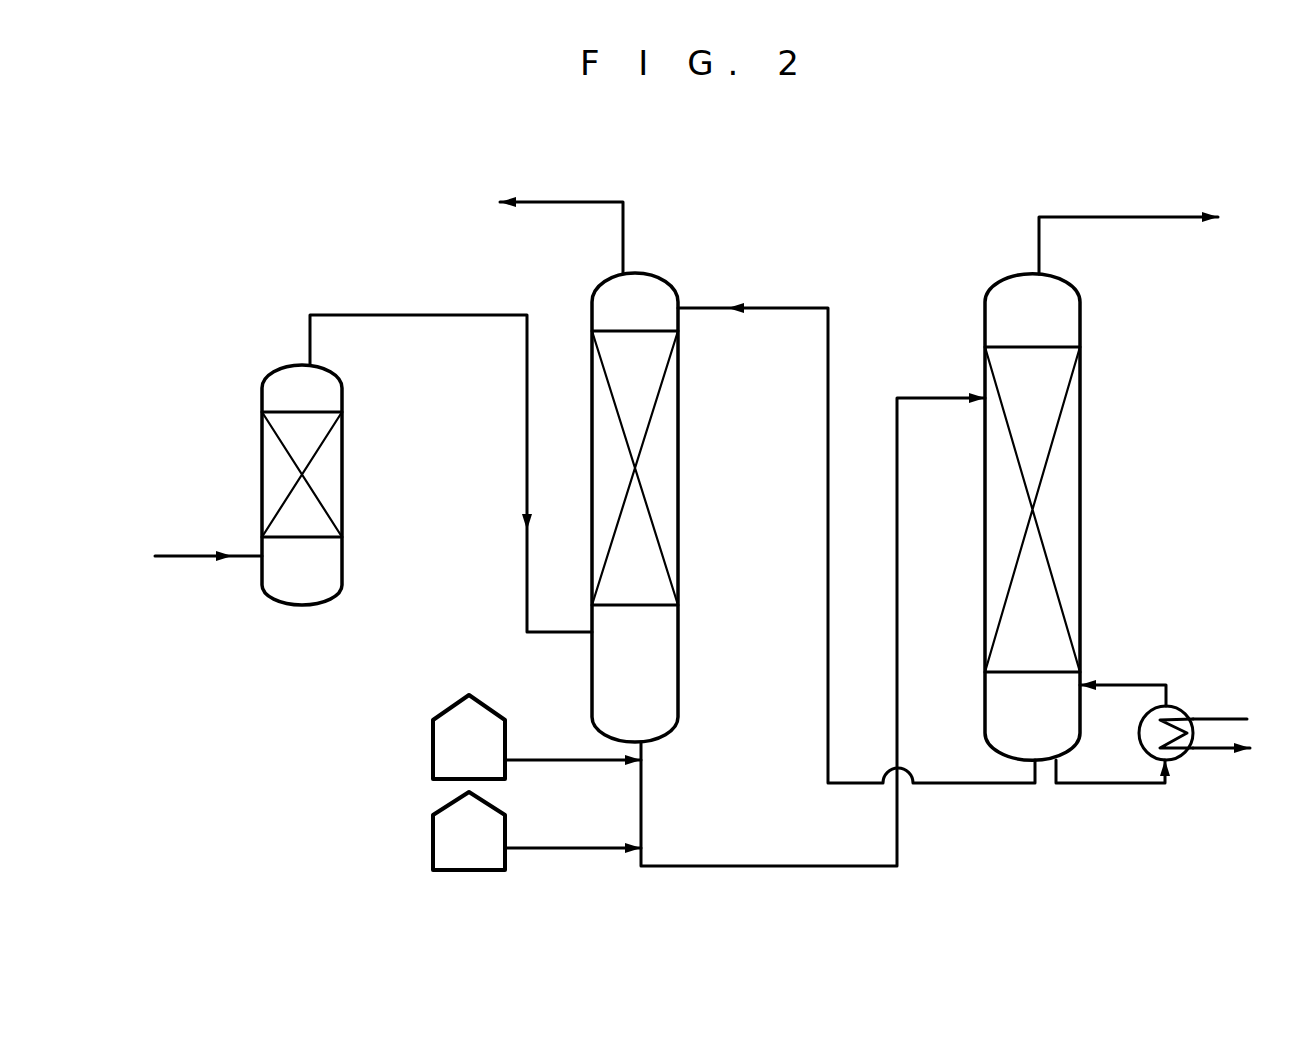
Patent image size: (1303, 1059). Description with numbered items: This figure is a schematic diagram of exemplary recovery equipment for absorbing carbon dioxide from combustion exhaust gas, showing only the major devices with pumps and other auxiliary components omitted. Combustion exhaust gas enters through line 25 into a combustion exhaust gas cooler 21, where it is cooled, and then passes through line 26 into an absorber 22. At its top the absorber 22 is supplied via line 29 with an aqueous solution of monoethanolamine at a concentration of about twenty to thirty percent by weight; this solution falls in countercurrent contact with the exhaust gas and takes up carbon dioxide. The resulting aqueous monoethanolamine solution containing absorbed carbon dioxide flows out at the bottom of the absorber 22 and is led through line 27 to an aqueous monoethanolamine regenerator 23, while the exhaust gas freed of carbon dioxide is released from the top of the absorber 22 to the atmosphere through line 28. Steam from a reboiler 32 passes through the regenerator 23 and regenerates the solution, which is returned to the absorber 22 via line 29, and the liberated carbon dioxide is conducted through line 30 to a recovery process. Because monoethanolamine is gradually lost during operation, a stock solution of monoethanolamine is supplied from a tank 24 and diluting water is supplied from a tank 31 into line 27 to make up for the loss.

The combustion exhaust gas cooler 21 is at (342, 483).
The absorber 22 is at (680, 481).
The aqueous monoethanolamine regenerator 23 is at (1080, 318).
The tank 24 is at (490, 712).
The line 25 is at (178, 558).
The line 26 is at (432, 318).
The line 27 is at (770, 868).
The line 28 is at (558, 202).
The line 29 is at (828, 338).
The line 30 is at (1097, 217).
The tank 31 is at (500, 812).
The reboiler 32 is at (1178, 708).